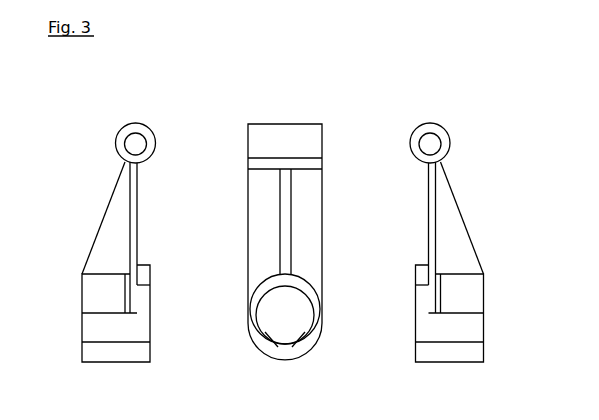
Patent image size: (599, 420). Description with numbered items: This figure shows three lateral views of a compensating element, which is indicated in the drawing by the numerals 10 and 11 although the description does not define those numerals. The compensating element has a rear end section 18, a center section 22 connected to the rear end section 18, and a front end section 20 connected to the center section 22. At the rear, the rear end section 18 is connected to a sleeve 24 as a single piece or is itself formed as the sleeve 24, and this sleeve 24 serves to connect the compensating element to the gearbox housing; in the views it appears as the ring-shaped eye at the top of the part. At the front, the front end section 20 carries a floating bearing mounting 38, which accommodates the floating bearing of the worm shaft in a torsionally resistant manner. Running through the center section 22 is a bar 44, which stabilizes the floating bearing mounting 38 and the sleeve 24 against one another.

The fastening assembly 10 is at (493, 59).
The bolt 11 is at (298, 145).
The rear end section 18 is at (112, 143).
The front end section 20 is at (95, 332).
The center section 22 is at (99, 218).
The sleeve 24 is at (437, 143).
The floating bearing mounting 38 is at (453, 326).
The bar 44 is at (290, 236).